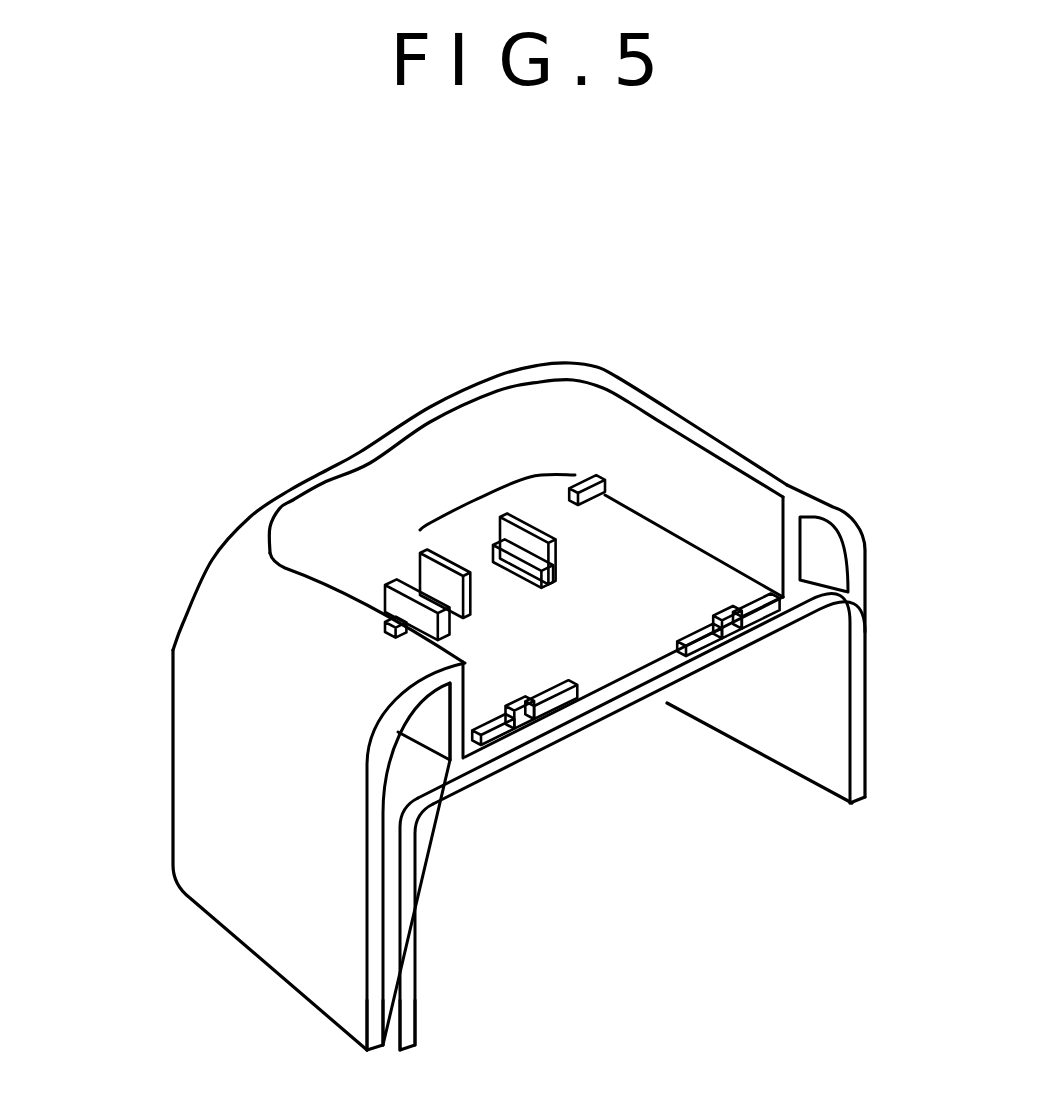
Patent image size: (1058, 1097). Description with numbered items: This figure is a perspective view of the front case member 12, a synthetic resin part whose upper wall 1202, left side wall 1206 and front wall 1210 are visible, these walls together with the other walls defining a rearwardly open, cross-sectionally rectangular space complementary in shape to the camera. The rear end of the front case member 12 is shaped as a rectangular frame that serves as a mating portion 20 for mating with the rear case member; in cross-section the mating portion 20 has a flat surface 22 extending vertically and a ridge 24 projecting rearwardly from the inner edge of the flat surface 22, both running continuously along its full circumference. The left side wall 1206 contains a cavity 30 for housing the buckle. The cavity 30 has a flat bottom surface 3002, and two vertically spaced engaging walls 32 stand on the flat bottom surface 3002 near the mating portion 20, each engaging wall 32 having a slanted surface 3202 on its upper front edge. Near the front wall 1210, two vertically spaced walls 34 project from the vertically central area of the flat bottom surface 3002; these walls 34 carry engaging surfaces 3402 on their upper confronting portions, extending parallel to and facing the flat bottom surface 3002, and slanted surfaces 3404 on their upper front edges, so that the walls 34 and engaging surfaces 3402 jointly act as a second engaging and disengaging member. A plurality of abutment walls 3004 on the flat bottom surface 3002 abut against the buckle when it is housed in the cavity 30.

The front case member 12 is at (207, 827).
The upper wall 1202 is at (258, 773).
The left side wall 1206 is at (297, 613).
The front wall 1210 is at (385, 423).
The mating portion 20 is at (368, 985).
The flat surface 22 is at (377, 892).
The ridge 24 is at (407, 963).
The cavity 30 is at (467, 449).
The flat bottom surface 3002 is at (593, 676).
The abutment walls 3004 is at (577, 473).
The engaging walls 32 is at (503, 740).
The slanted surfaces 3202 is at (425, 695).
The walls 34 is at (450, 560).
The engaging surfaces 3402 is at (548, 688).
The slanted surfaces 3404 is at (390, 578).